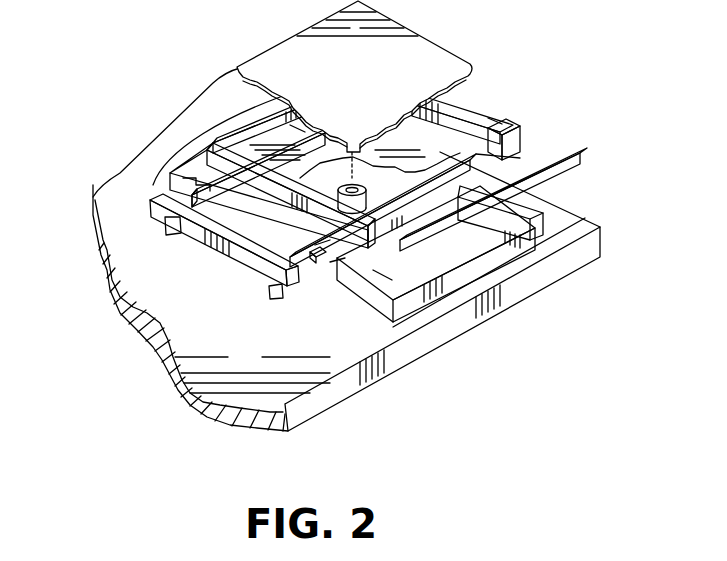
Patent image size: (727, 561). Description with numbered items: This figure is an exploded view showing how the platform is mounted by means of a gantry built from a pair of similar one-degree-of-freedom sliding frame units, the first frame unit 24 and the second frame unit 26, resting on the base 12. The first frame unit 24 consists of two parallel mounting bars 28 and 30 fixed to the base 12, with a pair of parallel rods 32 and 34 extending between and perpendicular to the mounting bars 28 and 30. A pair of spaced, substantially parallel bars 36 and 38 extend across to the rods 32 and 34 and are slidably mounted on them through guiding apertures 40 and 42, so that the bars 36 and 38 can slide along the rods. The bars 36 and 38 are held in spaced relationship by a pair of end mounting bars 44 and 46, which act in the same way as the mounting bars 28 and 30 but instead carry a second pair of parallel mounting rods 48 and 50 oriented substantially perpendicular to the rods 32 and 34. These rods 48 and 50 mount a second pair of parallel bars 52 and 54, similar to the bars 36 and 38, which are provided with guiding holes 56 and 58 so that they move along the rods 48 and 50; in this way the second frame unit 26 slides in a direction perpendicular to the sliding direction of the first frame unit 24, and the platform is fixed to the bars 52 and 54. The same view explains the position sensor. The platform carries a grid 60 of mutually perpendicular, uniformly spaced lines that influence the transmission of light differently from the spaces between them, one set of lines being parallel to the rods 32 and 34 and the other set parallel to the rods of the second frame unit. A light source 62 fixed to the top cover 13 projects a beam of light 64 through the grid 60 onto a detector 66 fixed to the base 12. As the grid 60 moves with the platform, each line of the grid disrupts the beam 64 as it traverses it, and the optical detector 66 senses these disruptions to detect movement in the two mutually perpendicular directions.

The base 12 is at (447, 333).
The top cover 13 is at (440, 53).
The first frame unit 24 is at (191, 249).
The second frame unit 26 is at (507, 170).
The mounting bar 28 is at (262, 148).
The mounting bar 30 is at (600, 257).
The rod 32 is at (375, 272).
The rod 34 is at (375, 200).
The bar 36 is at (313, 262).
The bar 38 is at (149, 208).
The guiding aperture 40 is at (300, 224).
The guiding aperture 42 is at (463, 194).
The end mounting bar 44 is at (330, 240).
The end mounting bar 46 is at (480, 116).
The mounting rod 48 is at (220, 163).
The mounting rod 50 is at (506, 124).
The bar 52 is at (520, 158).
The bar 54 is at (305, 132).
The guiding hole 56 is at (345, 258).
The guiding hole 58 is at (282, 140).
The grid 60 is at (345, 150).
The light source 62 is at (496, 118).
The beam of light 64 is at (548, 251).
The detector 66 is at (492, 280).